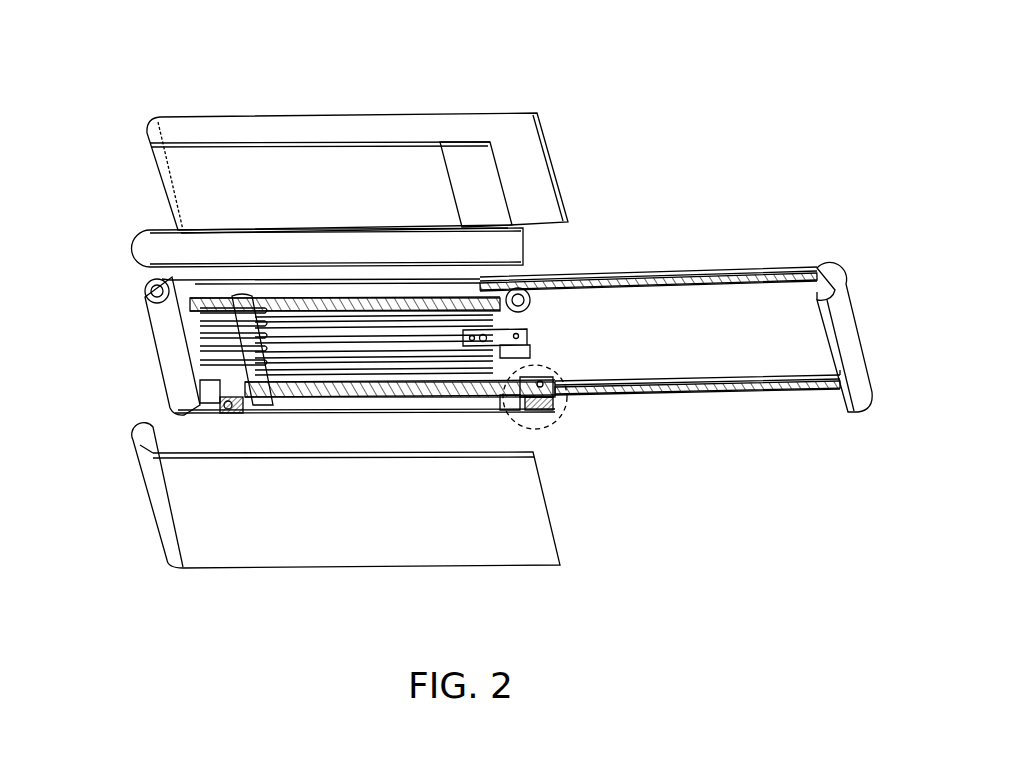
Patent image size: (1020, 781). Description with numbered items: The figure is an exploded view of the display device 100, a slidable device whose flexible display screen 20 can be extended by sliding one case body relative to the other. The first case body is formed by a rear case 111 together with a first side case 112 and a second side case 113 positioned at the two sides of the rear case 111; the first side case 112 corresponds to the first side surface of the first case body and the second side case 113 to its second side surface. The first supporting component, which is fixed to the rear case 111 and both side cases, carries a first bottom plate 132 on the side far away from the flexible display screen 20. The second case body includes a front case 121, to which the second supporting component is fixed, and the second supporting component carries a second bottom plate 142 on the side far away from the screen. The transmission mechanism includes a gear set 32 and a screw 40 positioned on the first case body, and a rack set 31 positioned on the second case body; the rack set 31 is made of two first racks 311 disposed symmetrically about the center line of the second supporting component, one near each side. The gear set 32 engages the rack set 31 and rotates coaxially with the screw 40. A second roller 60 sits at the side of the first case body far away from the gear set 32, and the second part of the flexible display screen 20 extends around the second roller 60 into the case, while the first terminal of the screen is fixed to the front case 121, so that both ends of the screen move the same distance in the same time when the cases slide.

The display device 100 is at (134, 70).
The flexible display screen 20 is at (163, 175).
The second side case 113 is at (158, 248).
The first bottom plate 132 is at (190, 321).
The second roller 60 is at (175, 357).
The screw 40 is at (352, 385).
The first side case 112 is at (428, 398).
The gear set 32 is at (559, 421).
The rack set 31 is at (703, 206).
The first rack 311 is at (642, 387).
The second bottom plate 142 is at (785, 362).
The front case 121 is at (856, 392).
The rear case 111 is at (155, 489).